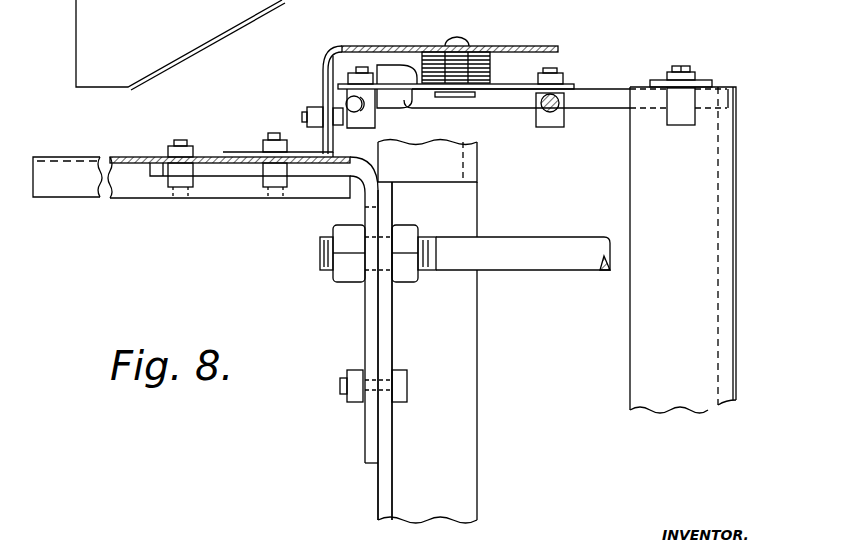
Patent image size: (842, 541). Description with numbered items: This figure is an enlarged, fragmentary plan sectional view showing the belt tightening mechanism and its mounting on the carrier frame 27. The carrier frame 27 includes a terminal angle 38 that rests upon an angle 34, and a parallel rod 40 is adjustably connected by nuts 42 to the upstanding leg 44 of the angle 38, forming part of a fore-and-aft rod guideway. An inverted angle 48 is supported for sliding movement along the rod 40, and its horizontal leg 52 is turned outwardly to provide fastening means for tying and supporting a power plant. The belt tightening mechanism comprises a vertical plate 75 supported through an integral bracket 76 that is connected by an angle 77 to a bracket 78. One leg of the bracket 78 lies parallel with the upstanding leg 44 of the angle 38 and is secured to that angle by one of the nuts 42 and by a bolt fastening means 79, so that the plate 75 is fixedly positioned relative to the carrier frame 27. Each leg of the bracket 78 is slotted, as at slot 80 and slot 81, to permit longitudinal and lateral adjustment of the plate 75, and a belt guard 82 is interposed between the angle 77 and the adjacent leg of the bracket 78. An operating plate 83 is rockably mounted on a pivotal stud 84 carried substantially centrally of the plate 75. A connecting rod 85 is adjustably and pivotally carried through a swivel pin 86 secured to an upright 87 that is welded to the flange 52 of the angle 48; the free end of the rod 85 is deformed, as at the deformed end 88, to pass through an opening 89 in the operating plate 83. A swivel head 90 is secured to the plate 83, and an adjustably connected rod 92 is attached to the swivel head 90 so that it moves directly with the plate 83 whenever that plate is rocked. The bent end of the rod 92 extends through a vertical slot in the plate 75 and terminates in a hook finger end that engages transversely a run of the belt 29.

The carrier frame 27 is at (352, 482).
The belt 29 is at (180, 45).
The angle 34 is at (470, 167).
The terminal angle 38 is at (464, 465).
The parallel rod 40 is at (565, 266).
The nuts 42 is at (342, 277).
The upstanding leg 44 is at (383, 495).
The inverted angle 48 is at (628, 350).
The horizontal leg 52 is at (670, 397).
The vertical plate 75 is at (513, 46).
The integral bracket 76 is at (322, 68).
The angle 77 is at (317, 138).
The bracket 78 is at (210, 163).
The bolt fastening means 79 is at (404, 396).
The slot 80 is at (157, 177).
The slot 81 is at (378, 425).
The belt guard 82 is at (72, 187).
The operating plate 83 is at (572, 83).
The pivotal stud 84 is at (472, 98).
The connecting rod 85 is at (598, 109).
The swivel pin 86 is at (690, 115).
The upright 87 is at (700, 80).
The deformed end 88 is at (416, 52).
The opening 89 is at (408, 102).
The swivel head 90 is at (373, 118).
The rod 92 is at (357, 97).